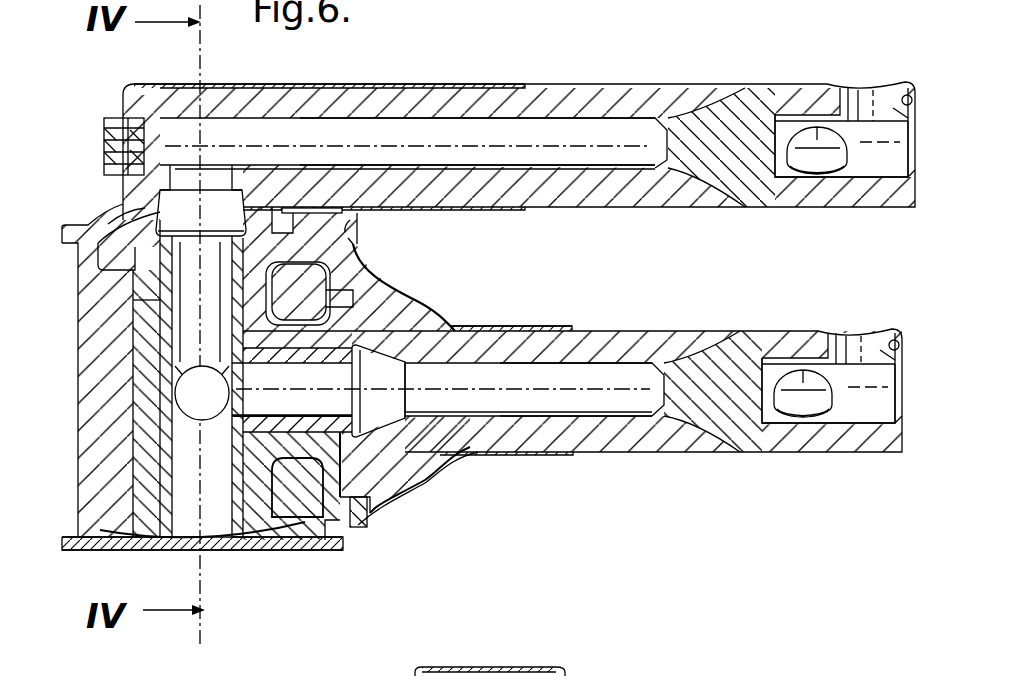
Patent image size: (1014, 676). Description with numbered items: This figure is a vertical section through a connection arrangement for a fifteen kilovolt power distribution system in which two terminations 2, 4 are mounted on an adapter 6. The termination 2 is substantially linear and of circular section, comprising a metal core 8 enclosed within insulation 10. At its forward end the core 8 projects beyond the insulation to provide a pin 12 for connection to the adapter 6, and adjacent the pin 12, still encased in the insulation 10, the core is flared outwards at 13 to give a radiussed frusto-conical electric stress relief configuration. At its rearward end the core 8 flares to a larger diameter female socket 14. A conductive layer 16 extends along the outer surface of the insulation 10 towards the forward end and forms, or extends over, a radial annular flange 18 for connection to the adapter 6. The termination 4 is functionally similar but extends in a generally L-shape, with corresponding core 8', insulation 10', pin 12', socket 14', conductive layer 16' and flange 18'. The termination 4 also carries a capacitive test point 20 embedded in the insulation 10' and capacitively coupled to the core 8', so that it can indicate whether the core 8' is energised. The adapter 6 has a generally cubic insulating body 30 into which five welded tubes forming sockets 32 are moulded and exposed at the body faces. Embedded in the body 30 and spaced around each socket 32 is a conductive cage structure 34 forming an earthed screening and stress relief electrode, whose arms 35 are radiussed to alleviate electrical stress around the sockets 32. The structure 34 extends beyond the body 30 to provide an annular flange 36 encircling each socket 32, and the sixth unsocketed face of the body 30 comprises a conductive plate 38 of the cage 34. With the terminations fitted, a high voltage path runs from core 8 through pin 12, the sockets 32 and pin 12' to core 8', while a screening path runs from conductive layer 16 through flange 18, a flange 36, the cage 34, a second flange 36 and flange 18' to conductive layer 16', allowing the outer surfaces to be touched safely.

The termination 2 is at (746, 322).
The termination 4 is at (566, 74).
The adapter 6 is at (289, 502).
The metal core 8 is at (592, 461).
The conductive core 8' is at (501, 82).
The insulation 10 is at (588, 320).
The insulation 10' is at (477, 61).
The pin 12 is at (370, 435).
The pin 12' is at (96, 381).
The flared portion 13 is at (420, 311).
The female socket 14 is at (828, 440).
The female socket 14' is at (834, 88).
The conductive layer 16 is at (517, 472).
The conductive layer 16' is at (329, 45).
The radial annular flange 18 is at (397, 269).
The radial annular flange 18' is at (109, 208).
The capacitive test point 20 is at (96, 129).
The insulating body 30 is at (146, 537).
The socket 32 is at (208, 512).
The conductive cage structure 34 is at (72, 440).
The arms 35 is at (297, 477).
The annular flange 36 is at (282, 221).
The conductive plate 38 is at (108, 440).